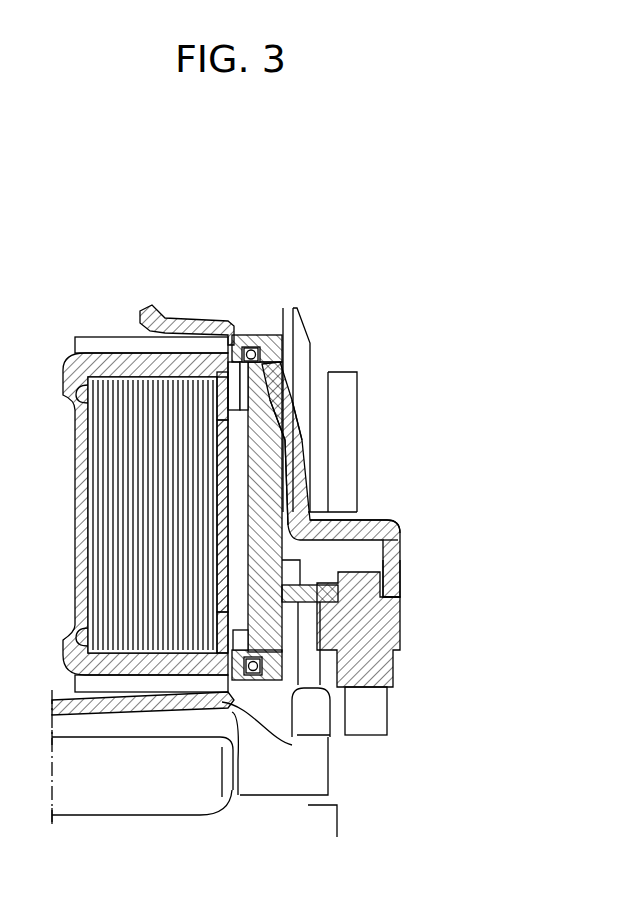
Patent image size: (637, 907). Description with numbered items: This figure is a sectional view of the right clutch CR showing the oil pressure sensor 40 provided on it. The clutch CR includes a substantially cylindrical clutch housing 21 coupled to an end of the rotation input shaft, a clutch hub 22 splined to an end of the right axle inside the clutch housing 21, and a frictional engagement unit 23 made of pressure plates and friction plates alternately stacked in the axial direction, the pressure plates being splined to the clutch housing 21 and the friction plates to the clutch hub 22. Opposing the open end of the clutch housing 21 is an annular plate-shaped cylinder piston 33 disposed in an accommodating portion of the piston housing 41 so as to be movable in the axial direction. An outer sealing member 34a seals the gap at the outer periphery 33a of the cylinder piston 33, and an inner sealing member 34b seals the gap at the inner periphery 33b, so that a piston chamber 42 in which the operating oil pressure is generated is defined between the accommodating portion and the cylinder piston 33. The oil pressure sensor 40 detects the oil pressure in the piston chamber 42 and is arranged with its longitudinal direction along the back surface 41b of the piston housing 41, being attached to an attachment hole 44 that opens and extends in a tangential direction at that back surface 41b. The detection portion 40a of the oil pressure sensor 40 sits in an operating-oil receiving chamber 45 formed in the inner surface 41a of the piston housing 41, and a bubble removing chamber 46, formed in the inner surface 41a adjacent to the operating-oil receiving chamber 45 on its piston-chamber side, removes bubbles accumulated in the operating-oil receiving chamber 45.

The right clutch CR is at (99, 346).
The clutch housing 21 is at (137, 360).
The clutch hub 22 is at (232, 444).
The frictional engagement unit 23 is at (180, 390).
The cylinder piston 33 is at (268, 480).
The outer periphery of the cylinder piston 33a is at (256, 350).
The inner periphery of the cylinder piston 33b is at (294, 746).
The outer sealing member 34a is at (250, 350).
The inner sealing member 34b is at (252, 676).
The oil pressure sensor 40 is at (403, 636).
The detection portion 40a is at (387, 550).
The piston housing 41 is at (284, 385).
The inner surface of the piston housing 41a is at (297, 398).
The back surface of the piston housing 41b is at (292, 410).
The piston chamber 42 is at (289, 461).
The attachment hole 44 is at (401, 563).
The operating-oil receiving chamber 45 is at (388, 530).
The bubble removing chamber 46 is at (383, 520).